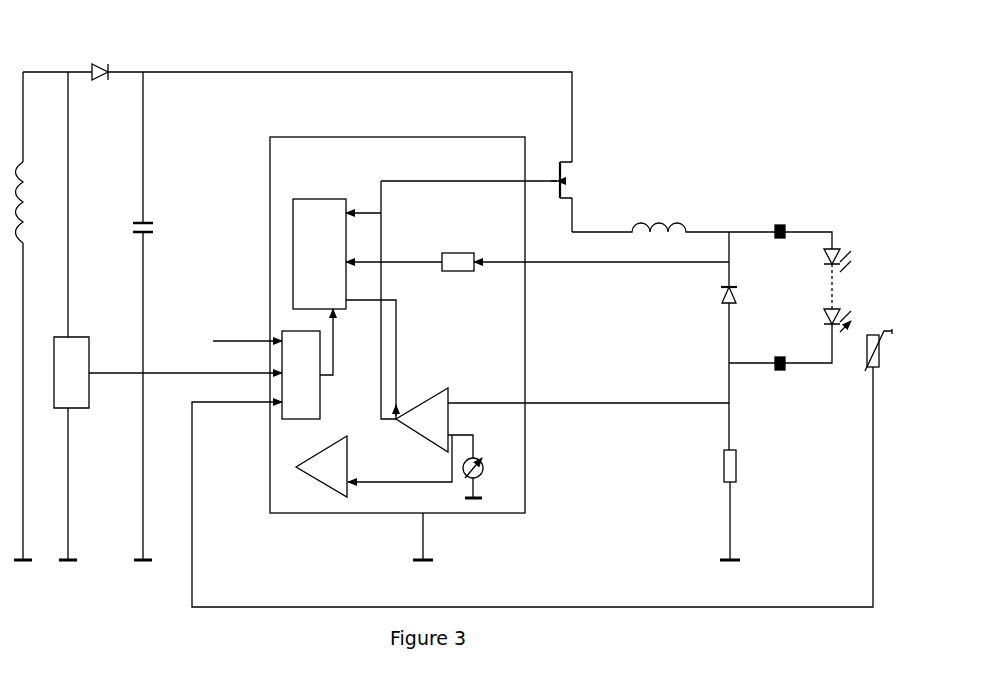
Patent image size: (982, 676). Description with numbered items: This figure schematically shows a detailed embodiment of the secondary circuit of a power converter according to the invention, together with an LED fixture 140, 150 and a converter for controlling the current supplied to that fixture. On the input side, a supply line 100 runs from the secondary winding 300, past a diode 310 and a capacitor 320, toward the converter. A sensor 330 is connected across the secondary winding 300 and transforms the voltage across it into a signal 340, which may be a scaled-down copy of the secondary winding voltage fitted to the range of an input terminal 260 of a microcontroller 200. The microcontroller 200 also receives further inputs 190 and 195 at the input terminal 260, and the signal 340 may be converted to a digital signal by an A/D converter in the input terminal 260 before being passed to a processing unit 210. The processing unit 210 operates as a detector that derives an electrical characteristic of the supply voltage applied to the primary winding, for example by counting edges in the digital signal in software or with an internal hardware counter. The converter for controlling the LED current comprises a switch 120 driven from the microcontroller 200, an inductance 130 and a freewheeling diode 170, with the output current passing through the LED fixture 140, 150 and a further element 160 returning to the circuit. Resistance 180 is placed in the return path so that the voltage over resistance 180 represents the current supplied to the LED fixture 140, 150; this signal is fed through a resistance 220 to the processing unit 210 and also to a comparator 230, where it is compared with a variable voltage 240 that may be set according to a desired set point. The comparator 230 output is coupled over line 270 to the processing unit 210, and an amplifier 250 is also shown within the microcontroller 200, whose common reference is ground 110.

The supply voltage line 100 is at (262, 70).
The ground 110 is at (412, 563).
The switch 120 is at (578, 186).
The inductance 130 is at (653, 228).
The LED fixture 140 is at (780, 225).
The LED fixture 150 is at (836, 248).
The temperature sensor 160 is at (879, 331).
The freewheeling diode 170 is at (722, 295).
The resistance 180 is at (737, 462).
The enable input 190 is at (250, 338).
The feedback input 195 is at (213, 406).
The microcontroller 200 is at (270, 180).
The processing unit 210 is at (327, 199).
The resistor 220 is at (460, 253).
The comparator 230 is at (433, 385).
The variable voltage 240 is at (480, 455).
The amplifier 250 is at (350, 466).
The input terminal 260 is at (321, 390).
The signal line 270 is at (398, 330).
The secondary winding 300 is at (17, 210).
The input diode 310 is at (100, 65).
The input capacitor 320 is at (140, 215).
The sensor 330 is at (90, 346).
The signal 340 is at (193, 370).